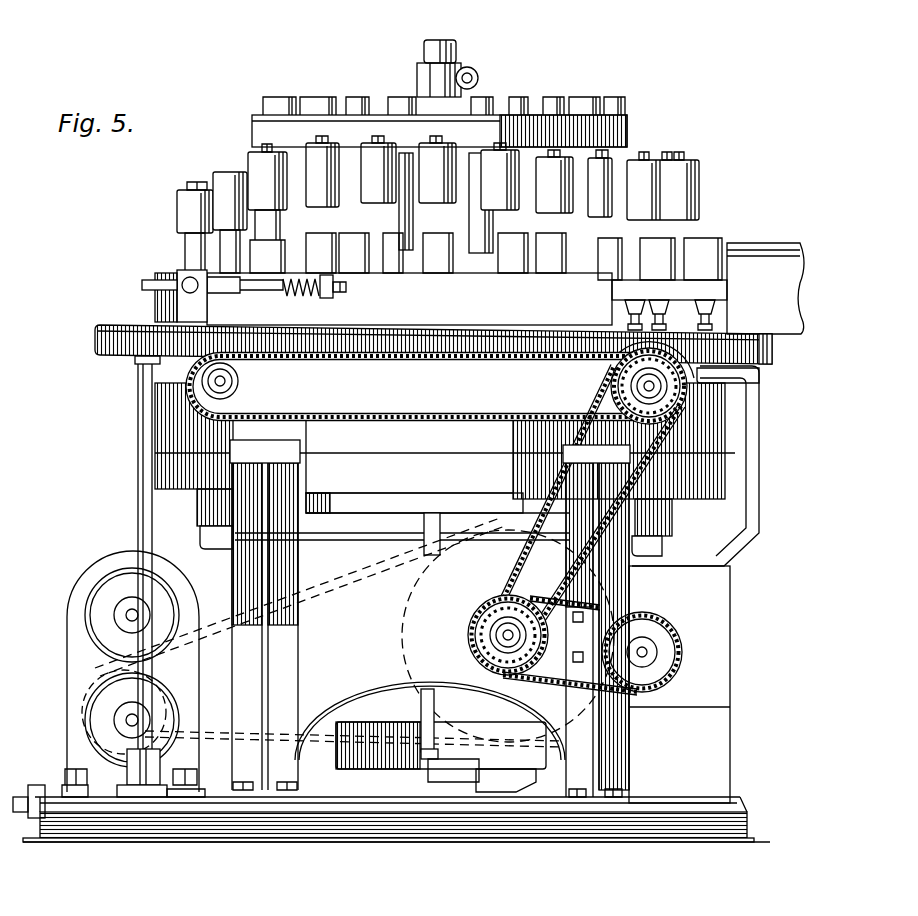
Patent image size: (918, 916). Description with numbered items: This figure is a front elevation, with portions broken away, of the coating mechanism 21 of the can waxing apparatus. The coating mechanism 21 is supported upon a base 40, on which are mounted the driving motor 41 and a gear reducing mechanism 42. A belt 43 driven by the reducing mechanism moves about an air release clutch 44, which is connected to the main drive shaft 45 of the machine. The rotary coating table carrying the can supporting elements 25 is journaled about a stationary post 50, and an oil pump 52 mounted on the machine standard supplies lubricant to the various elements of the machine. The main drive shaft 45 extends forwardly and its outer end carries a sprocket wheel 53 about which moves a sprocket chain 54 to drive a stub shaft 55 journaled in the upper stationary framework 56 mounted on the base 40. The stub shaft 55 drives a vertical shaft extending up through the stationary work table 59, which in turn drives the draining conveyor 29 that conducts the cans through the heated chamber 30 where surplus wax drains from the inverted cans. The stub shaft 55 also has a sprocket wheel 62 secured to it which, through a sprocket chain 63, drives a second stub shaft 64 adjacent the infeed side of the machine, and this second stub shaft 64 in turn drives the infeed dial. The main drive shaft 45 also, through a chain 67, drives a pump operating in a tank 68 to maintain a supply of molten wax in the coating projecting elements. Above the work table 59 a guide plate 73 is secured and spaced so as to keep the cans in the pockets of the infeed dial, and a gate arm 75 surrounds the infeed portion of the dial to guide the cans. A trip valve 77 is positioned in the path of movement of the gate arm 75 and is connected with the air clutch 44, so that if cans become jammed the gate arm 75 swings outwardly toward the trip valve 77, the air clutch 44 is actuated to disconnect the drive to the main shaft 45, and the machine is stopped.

The coating mechanism 21 is at (140, 461).
The can supporting elements 25 is at (626, 158).
The draining conveyor 29 is at (684, 288).
The heated chamber 30 is at (762, 250).
The base 40 is at (250, 812).
The driving motor 41 is at (96, 605).
The gear reducing mechanism 42 is at (90, 712).
The belt 43 is at (338, 583).
The air release clutch 44 is at (412, 632).
The main drive shaft 45 is at (505, 633).
The stationary post 50 is at (455, 60).
The oil pump 52 is at (394, 753).
The sprocket wheel 53 is at (520, 606).
The sprocket chain 54 is at (514, 565).
The stub shaft 55 is at (612, 380).
The stationary framework 56 is at (600, 452).
The stationary work table 59 is at (406, 326).
The sprocket wheel 62 is at (665, 390).
The sprocket chain 63 is at (378, 410).
The second stub shaft 64 is at (214, 384).
The chain 67 is at (662, 603).
The tank 68 is at (714, 678).
The guide plate 73 is at (409, 297).
The gate arm 75 is at (155, 292).
The trip valve 77 is at (190, 277).